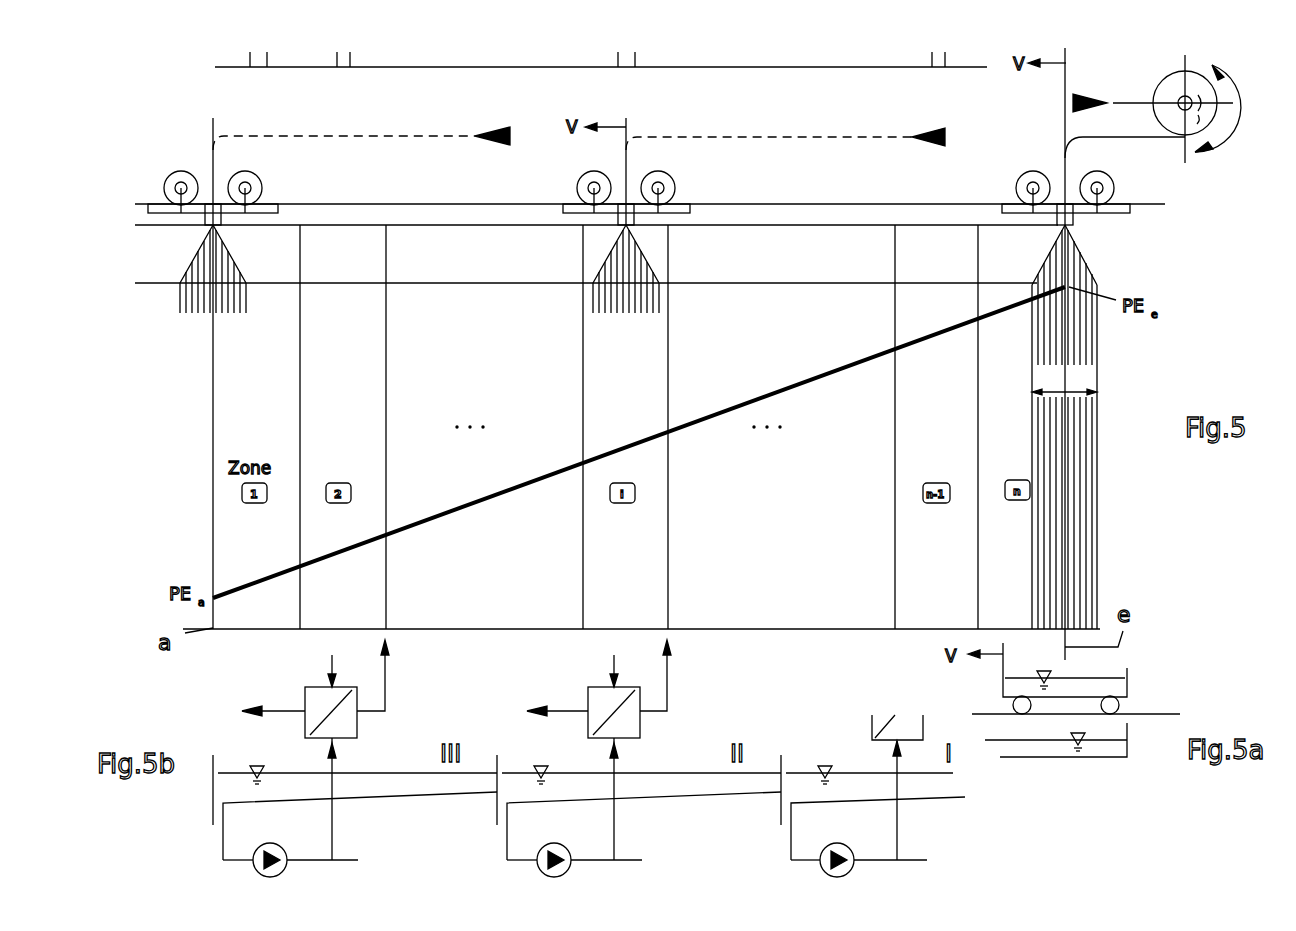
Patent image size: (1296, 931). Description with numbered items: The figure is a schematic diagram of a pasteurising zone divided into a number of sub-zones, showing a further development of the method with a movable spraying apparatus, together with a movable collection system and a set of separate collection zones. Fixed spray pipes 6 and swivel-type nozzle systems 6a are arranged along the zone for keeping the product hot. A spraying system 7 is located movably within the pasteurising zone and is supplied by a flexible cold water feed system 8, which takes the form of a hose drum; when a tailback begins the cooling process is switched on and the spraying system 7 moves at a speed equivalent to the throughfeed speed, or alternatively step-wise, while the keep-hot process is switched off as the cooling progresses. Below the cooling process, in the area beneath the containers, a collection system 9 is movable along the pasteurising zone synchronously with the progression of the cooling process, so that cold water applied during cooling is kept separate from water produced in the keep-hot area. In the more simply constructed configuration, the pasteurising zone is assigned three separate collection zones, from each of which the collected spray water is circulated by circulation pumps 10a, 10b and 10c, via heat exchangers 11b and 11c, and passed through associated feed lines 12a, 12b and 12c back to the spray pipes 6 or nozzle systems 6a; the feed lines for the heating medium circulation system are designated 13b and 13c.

In FIG. 5, the fixed spray pipes 6 is at (561, 54).
In FIG. 5, the swivel-type nozzle systems 6a is at (250, 56).
In FIG. 5, the movable spraying system 7 is at (1127, 212).
In FIG. 5, the flexible cold water feed system 8 is at (1193, 128).
In FIG. 5A, the collection system 9 is at (1105, 688).
In FIG. 5B, the circulation pump 10a is at (877, 860).
In FIG. 5B, the circulation pump 10b is at (594, 860).
In FIG. 5B, the circulation pump 10c is at (309, 860).
In FIG. 5B, the heat exchanger 11b is at (630, 725).
In FIG. 5B, the heat exchanger 11c is at (347, 725).
In FIG. 5B, the feed line 12a is at (899, 817).
In FIG. 5B, the feed line 12b is at (616, 817).
In FIG. 5B, the feed line 12c is at (334, 817).
In FIG. 5B, the heating medium feed line 13b is at (614, 658).
In FIG. 5B, the heating medium feed line 13c is at (332, 658).